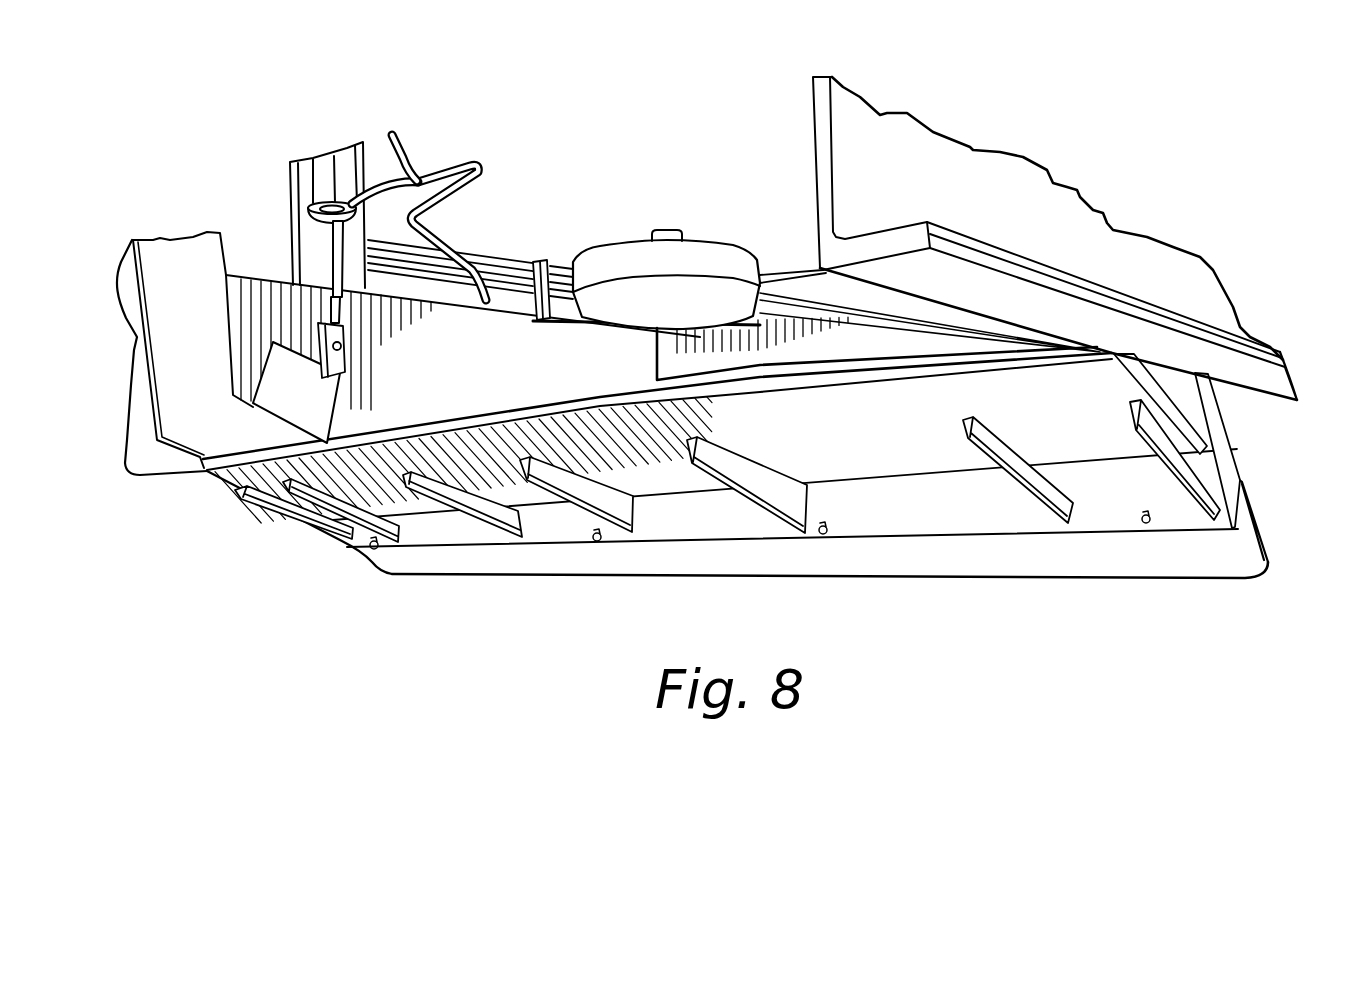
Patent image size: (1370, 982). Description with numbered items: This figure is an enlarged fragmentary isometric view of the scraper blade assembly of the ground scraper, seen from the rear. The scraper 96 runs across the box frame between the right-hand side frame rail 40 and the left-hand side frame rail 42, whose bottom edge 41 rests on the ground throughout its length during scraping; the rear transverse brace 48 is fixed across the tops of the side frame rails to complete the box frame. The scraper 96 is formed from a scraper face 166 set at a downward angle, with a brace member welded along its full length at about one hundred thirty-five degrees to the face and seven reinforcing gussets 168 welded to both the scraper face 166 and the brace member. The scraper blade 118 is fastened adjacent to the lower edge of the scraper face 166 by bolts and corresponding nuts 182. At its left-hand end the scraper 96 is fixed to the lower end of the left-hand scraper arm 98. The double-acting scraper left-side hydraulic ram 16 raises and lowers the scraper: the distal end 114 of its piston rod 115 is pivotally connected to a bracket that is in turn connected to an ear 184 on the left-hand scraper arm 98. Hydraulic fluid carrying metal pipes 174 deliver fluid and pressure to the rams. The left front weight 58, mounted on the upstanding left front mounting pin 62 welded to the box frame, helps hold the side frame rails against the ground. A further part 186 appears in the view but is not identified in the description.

The double-acting scraper left-side hydraulic ram 16 is at (350, 160).
The right-hand side frame rail 40 is at (1063, 190).
The bottom edge of the left-hand side frame rail 41 is at (1300, 394).
The left-hand side frame rail 42 is at (127, 391).
The rear transverse brace 48 is at (877, 346).
The left front weight 58 is at (623, 247).
The upstanding left front mounting pin 62 is at (665, 231).
The scraper 96 is at (1217, 393).
The left-hand scraper arm 98 is at (158, 240).
The distal end of the piston rod 114 is at (331, 313).
The piston rod 115 is at (333, 247).
The scraper blade 118 is at (1225, 582).
The scraper face 166 is at (1237, 461).
The reinforcing gussets 168 is at (250, 498).
The hydraulic fluid carrying metal pipes 174 is at (508, 288).
The bolts and corresponding nuts 182 is at (375, 549).
The ear 184 is at (350, 353).
The flap 186 is at (327, 412).